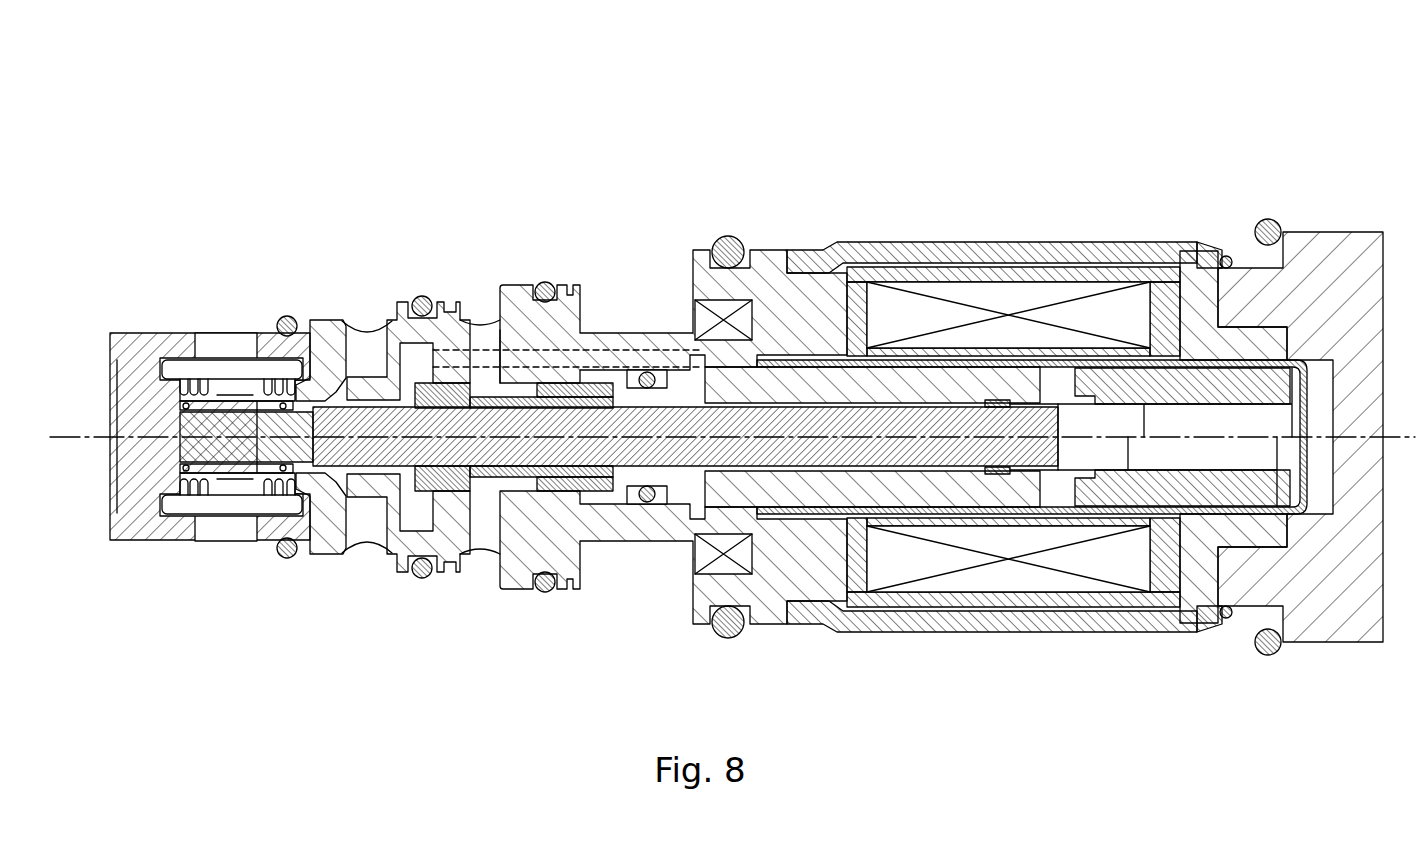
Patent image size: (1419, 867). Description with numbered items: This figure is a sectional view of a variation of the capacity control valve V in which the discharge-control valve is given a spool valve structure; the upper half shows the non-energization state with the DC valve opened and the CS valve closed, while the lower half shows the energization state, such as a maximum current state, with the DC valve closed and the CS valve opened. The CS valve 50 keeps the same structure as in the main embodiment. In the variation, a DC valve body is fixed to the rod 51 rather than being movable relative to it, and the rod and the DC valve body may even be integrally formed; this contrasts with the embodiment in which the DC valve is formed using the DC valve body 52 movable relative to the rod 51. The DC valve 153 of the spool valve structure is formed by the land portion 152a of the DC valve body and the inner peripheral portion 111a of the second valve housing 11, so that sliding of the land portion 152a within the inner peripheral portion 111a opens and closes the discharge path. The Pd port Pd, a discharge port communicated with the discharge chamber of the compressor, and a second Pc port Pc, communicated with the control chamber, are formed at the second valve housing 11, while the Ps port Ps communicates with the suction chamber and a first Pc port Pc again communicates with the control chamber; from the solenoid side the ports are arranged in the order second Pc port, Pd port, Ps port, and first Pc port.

The second valve housing 11 is at (523, 597).
The CS valve 50 is at (331, 365).
The rod 51 is at (1045, 397).
The DC valve body 52 is at (490, 484).
The DC valve 153 is at (549, 302).
The inner peripheral portion of the second valve housing 111a is at (513, 381).
The land portion of the DC valve body 152a is at (556, 389).
The capacity control valve V is at (1279, 109).
The Pc port Pc is at (225, 333).
The Ps port Ps is at (370, 332).
The Pd port Pd is at (488, 320).